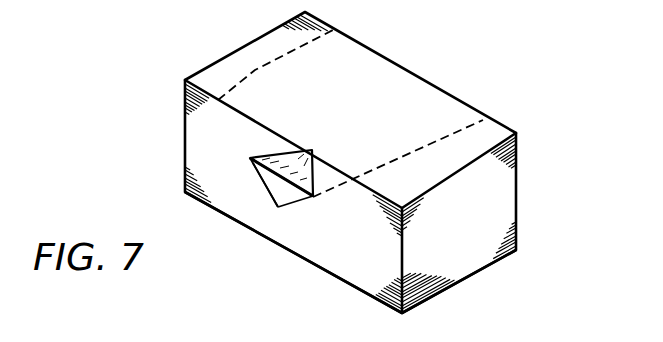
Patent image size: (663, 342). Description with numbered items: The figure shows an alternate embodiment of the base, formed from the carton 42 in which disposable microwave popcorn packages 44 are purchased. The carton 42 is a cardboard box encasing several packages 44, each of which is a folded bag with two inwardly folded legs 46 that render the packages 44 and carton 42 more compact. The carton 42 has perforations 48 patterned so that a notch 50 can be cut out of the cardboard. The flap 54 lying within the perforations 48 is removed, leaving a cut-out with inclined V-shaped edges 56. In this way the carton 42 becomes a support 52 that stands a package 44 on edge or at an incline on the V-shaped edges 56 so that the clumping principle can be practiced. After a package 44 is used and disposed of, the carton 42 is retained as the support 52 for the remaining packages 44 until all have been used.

The carton 42 is at (494, 195).
The disposable microwave popcorn package 44 is at (286, 204).
The inwardly folded legs 46 is at (459, 296).
The perforations 48 is at (255, 70).
The notch 50 is at (313, 198).
The support 52 is at (352, 285).
The flap 54 is at (301, 154).
The inclined V-shaped edges 56 is at (258, 172).